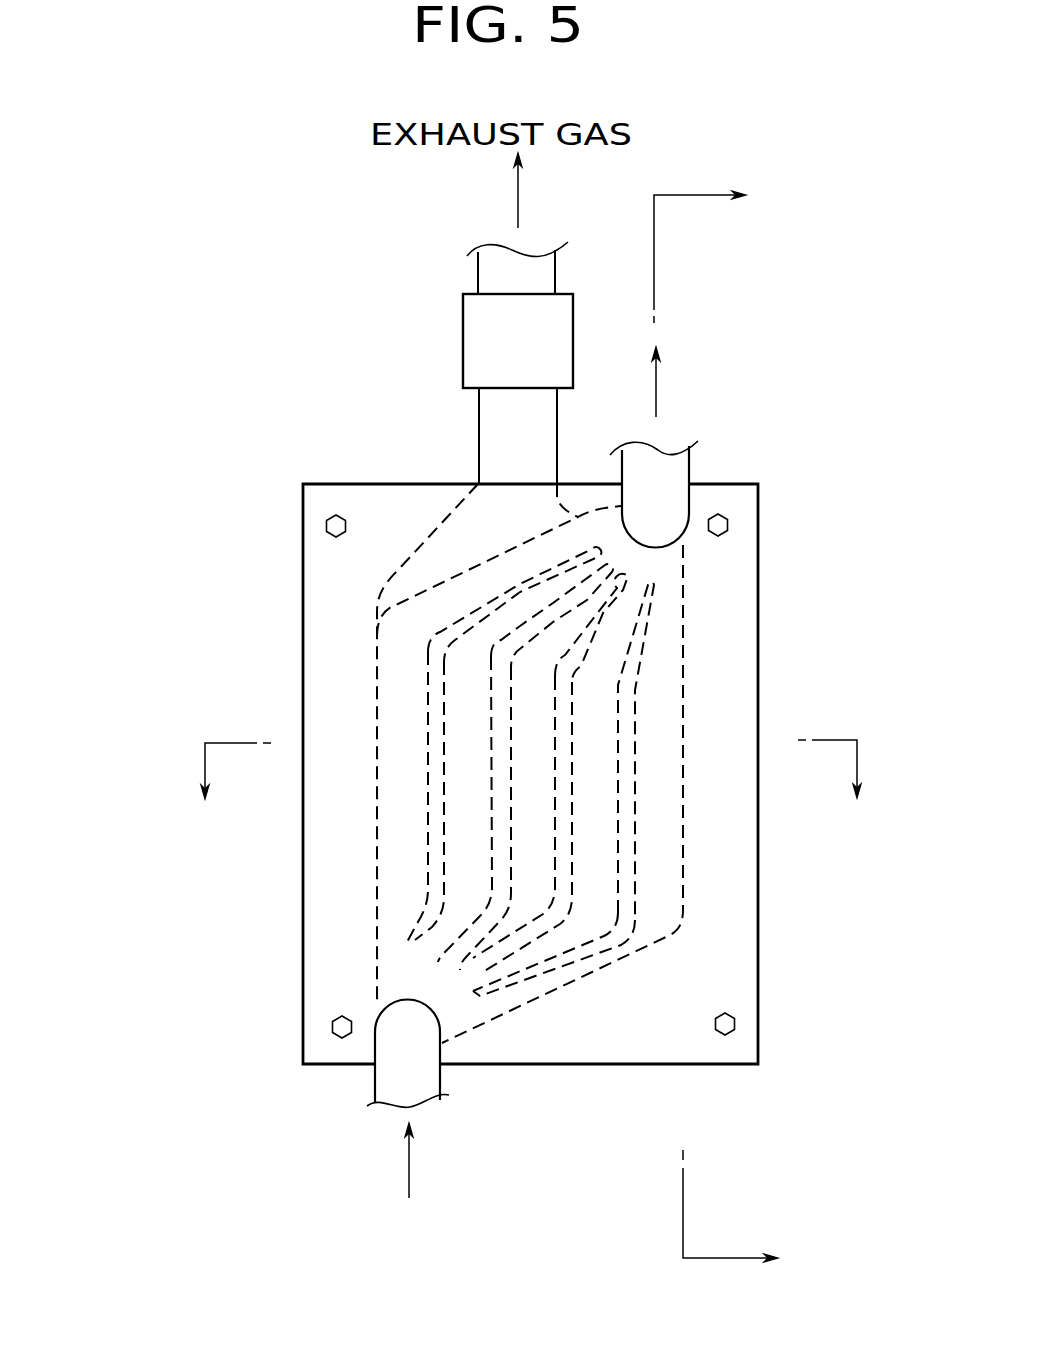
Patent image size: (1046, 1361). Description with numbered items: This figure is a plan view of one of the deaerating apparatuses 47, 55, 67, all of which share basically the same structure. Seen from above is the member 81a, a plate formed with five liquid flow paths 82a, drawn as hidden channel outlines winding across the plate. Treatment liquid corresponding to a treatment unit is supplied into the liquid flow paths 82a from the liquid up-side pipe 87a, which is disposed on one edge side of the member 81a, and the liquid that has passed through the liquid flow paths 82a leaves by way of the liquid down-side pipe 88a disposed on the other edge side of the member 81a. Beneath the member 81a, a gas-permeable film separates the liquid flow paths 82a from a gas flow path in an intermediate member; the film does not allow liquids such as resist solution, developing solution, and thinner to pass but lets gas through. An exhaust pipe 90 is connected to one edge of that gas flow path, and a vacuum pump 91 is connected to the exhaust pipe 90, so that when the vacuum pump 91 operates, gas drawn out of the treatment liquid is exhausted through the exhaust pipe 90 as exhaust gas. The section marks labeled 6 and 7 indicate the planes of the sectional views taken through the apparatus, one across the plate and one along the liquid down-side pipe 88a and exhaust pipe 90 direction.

The deaerating apparatus 47 is at (478, 720).
The deaerating apparatus 55 is at (508, 720).
The deaerating apparatus 67 is at (538, 720).
The member 81a is at (760, 528).
The liquid flow path 82a is at (511, 722).
The liquid up-side pipe 87a is at (373, 1090).
The liquid down-side pipe 88a is at (690, 462).
The exhaust pipe 90 is at (479, 430).
The vacuum pump 91 is at (463, 335).
The section line 6- 6 is at (533, 791).
The section line 7- 7 is at (735, 727).